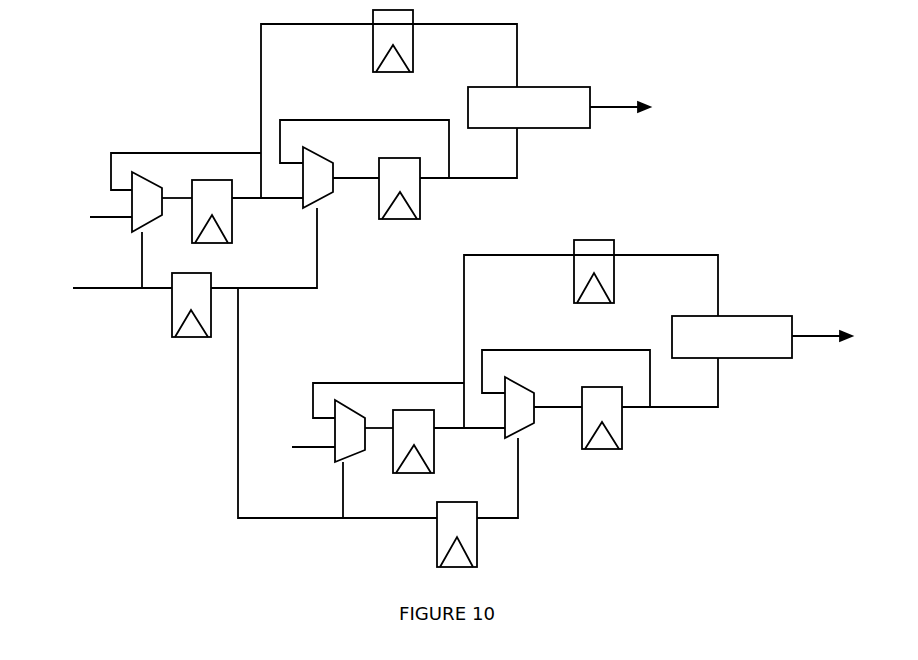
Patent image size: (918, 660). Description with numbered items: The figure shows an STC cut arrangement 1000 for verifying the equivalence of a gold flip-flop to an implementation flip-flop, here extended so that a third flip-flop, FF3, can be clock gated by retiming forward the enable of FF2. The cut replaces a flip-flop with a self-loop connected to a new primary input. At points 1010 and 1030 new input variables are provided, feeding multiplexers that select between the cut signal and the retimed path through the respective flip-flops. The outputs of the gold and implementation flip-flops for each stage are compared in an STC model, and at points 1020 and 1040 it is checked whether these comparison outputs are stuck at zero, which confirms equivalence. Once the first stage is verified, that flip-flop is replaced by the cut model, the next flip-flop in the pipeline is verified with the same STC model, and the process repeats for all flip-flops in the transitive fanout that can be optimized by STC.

The circuit model with STC models 1000 is at (758, 68).
The point 1010 is at (116, 221).
The point 1020 is at (600, 108).
The point 1030 is at (318, 450).
The point 1040 is at (802, 337).